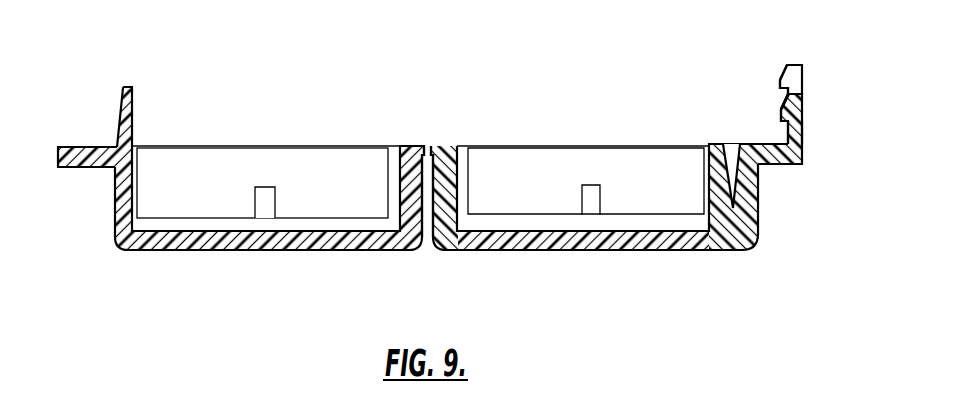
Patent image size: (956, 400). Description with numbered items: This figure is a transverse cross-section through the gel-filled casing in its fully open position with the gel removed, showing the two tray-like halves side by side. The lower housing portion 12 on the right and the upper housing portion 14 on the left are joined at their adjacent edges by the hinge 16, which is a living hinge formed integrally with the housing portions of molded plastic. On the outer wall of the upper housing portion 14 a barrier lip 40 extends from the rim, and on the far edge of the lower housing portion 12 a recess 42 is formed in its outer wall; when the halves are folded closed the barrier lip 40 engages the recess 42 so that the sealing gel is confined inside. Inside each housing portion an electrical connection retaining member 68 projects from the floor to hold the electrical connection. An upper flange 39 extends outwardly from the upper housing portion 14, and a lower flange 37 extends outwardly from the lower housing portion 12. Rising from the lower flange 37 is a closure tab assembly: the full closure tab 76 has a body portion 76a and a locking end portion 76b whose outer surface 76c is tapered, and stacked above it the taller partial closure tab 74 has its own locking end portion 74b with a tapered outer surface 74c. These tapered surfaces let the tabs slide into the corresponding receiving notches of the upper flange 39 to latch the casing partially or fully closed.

The lower housing portion 12 is at (738, 240).
The upper housing portion 14 is at (129, 256).
The hinge 16 is at (427, 145).
The lower flange 37 is at (775, 166).
The upper flange 39 is at (80, 168).
The barrier lip 40 is at (121, 112).
The recess 42 is at (728, 150).
The electrical connection retaining member 68 is at (256, 198).
The partial closure tab 74 is at (805, 54).
The locking end portion 74b is at (795, 80).
The outer surface 74c is at (785, 72).
The full closure tab 76 is at (834, 115).
The body portion 76a is at (798, 133).
The locking end portion 76b is at (805, 105).
The outer surface 76c is at (790, 107).